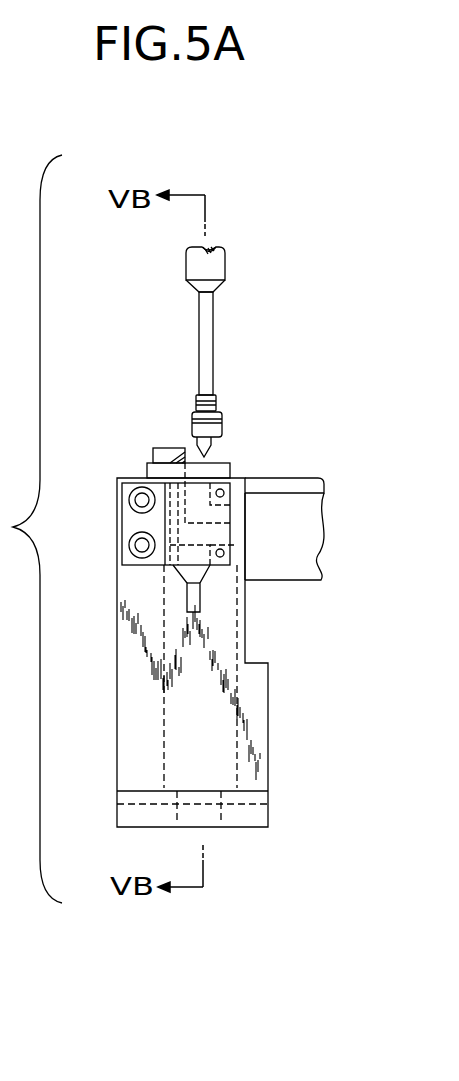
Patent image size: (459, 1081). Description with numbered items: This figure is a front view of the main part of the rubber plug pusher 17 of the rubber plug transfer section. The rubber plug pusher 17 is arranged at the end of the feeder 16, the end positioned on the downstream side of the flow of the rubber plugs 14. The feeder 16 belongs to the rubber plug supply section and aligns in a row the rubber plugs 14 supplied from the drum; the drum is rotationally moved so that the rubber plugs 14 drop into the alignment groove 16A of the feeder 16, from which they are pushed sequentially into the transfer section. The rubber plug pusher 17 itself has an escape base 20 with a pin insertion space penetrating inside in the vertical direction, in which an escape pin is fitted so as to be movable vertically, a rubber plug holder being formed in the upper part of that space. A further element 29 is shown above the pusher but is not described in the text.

The pin 29 is at (207, 330).
The rubber plug 14 is at (222, 428).
The alignment groove 16A is at (288, 484).
The feeder 16 is at (300, 524).
The rubber plug pusher 17 is at (110, 521).
The escape base 20 is at (117, 612).